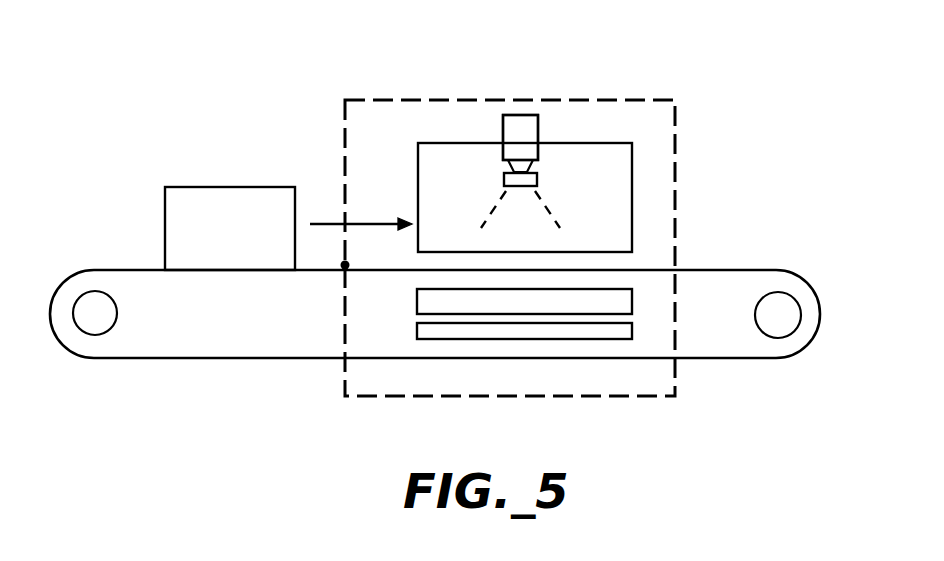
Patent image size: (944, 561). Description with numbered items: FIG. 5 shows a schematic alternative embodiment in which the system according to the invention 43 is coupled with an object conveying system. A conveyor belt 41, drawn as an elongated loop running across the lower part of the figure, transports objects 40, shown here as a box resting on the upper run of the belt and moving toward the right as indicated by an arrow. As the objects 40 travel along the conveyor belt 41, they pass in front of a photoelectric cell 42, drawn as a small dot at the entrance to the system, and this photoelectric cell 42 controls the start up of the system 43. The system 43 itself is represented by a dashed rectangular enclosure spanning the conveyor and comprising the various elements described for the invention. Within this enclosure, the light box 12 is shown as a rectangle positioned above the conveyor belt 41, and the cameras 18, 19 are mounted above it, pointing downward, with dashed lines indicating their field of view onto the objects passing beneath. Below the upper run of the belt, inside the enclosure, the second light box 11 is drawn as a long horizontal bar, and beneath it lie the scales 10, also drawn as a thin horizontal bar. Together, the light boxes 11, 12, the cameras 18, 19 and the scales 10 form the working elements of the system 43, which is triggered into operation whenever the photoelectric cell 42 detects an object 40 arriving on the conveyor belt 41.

The scales 10 is at (580, 334).
The light box 11 is at (625, 297).
The light box 12 is at (625, 185).
The camera 18 is at (533, 125).
The camera 19 is at (520, 137).
The objects 40 is at (206, 190).
The conveyor belt 41 is at (800, 352).
The photoelectric cell 42 is at (345, 268).
The system according to the invention 43 is at (425, 100).